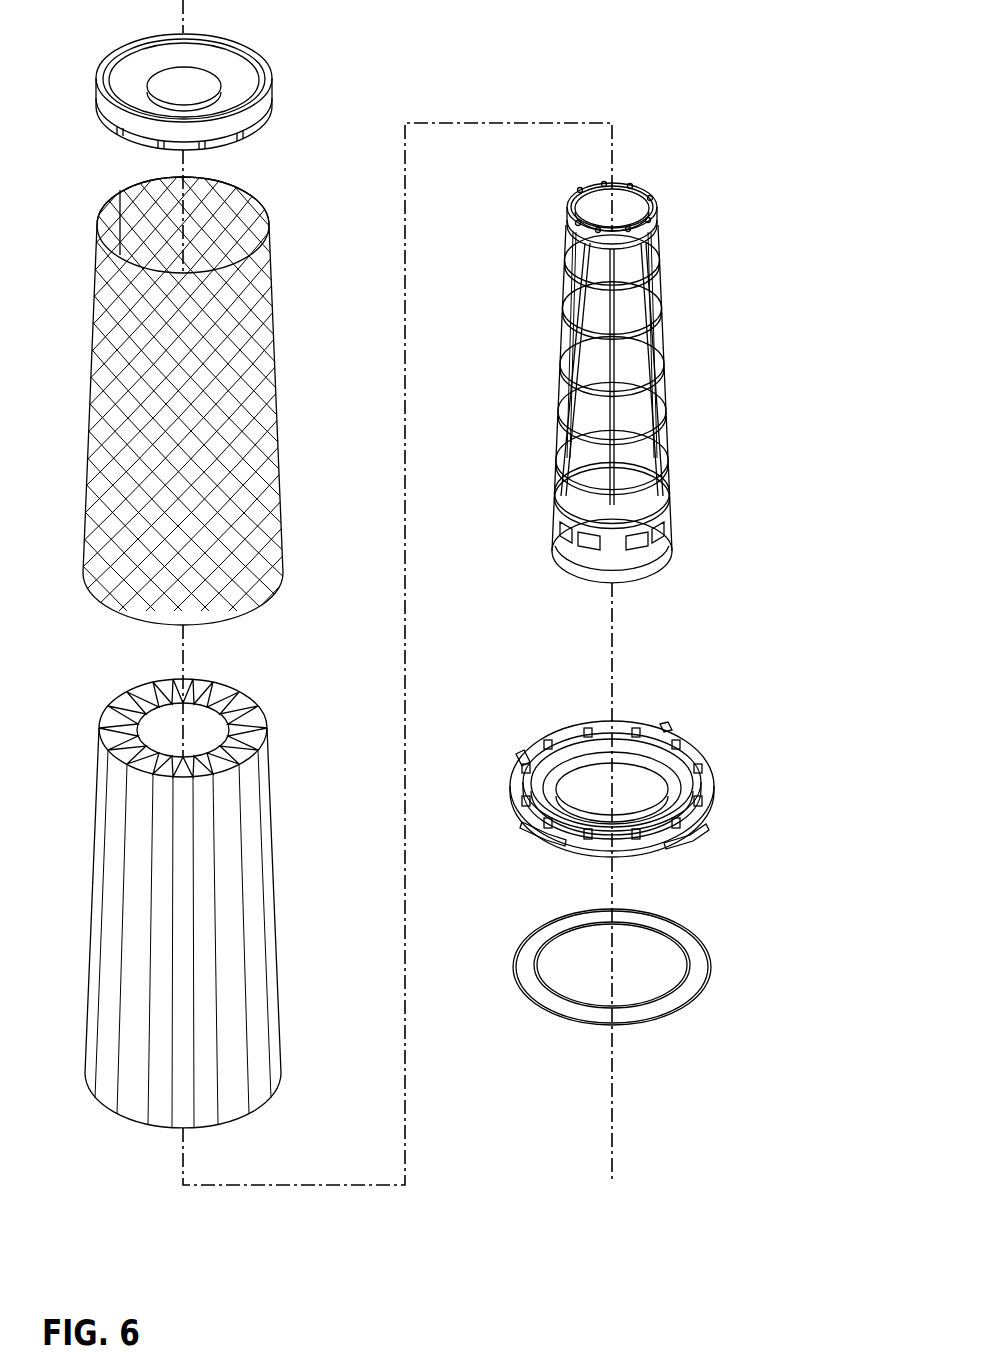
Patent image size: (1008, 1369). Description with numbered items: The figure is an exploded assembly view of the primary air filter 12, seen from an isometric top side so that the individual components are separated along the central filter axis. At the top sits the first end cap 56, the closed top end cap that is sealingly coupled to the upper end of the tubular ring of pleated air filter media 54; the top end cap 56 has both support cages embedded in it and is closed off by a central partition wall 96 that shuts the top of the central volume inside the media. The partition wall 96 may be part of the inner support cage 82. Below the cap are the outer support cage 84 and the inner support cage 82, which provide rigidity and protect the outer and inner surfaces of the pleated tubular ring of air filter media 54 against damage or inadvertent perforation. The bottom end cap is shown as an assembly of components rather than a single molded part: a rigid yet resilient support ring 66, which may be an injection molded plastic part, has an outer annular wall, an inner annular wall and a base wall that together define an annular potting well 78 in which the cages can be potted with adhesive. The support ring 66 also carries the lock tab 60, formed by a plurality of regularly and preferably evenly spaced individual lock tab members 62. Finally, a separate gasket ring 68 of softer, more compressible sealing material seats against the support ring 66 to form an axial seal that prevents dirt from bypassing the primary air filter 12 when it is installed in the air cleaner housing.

The primary air filter 12 is at (801, 435).
The air filter media 54 is at (252, 930).
The first end cap 56 is at (232, 80).
The lock tab 60 is at (639, 802).
The lock tab members 62 is at (530, 848).
The support ring 66 is at (708, 760).
The gasket ring 68 is at (698, 962).
The annular potting well 78 is at (673, 768).
The inner support cage 82 is at (652, 348).
The outer support cage 84 is at (246, 402).
The partition wall 96 is at (642, 190).